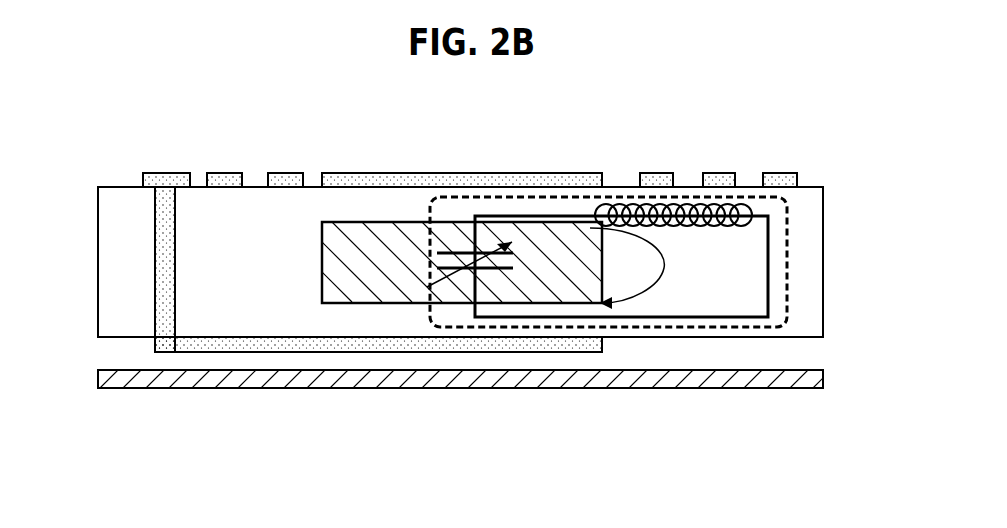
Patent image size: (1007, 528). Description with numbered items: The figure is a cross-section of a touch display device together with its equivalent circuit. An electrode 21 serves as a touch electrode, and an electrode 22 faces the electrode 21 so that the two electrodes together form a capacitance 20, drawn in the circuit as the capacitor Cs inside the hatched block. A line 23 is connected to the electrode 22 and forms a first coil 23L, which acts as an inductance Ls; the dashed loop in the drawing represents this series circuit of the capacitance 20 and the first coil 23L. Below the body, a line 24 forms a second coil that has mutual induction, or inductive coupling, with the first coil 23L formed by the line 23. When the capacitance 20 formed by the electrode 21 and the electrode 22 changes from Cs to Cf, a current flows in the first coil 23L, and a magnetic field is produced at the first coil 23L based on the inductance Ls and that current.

The capacitance 20 is at (358, 277).
The electrode 21 is at (433, 172).
The electrode 22 is at (575, 353).
The line 23 is at (777, 172).
The first coil 23L is at (680, 187).
The line 24 is at (768, 372).